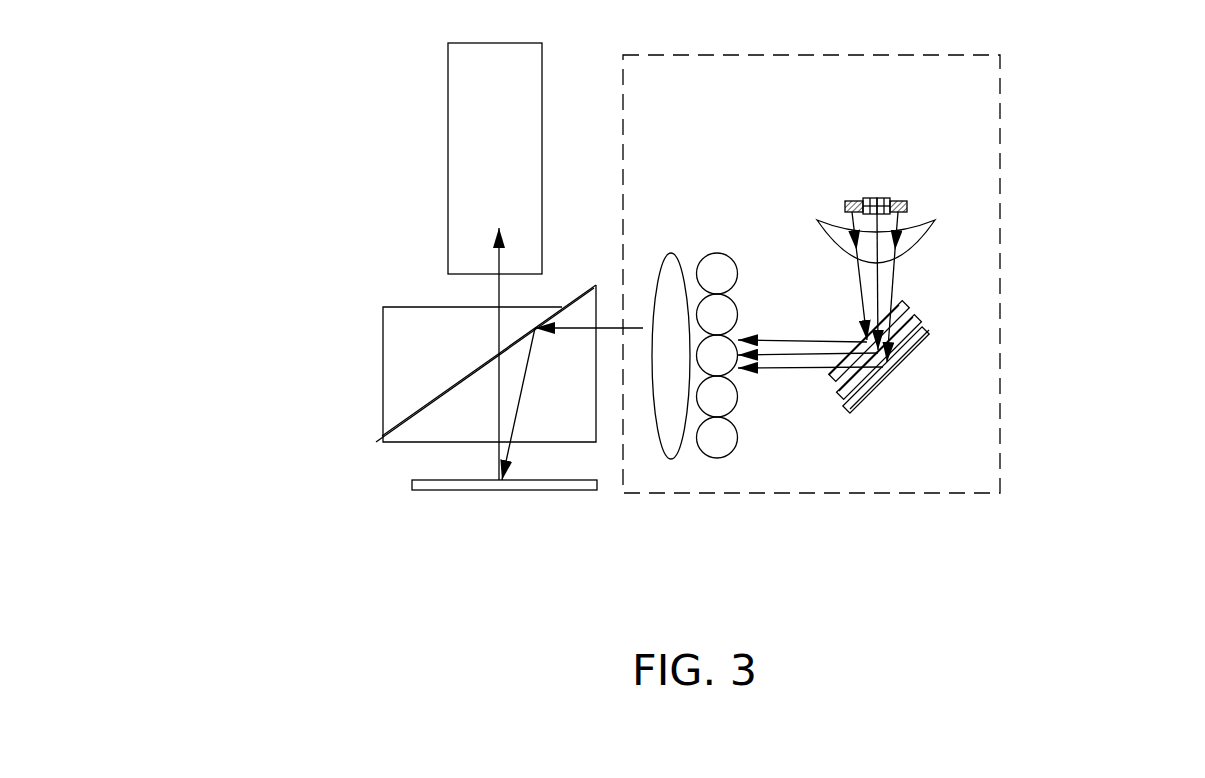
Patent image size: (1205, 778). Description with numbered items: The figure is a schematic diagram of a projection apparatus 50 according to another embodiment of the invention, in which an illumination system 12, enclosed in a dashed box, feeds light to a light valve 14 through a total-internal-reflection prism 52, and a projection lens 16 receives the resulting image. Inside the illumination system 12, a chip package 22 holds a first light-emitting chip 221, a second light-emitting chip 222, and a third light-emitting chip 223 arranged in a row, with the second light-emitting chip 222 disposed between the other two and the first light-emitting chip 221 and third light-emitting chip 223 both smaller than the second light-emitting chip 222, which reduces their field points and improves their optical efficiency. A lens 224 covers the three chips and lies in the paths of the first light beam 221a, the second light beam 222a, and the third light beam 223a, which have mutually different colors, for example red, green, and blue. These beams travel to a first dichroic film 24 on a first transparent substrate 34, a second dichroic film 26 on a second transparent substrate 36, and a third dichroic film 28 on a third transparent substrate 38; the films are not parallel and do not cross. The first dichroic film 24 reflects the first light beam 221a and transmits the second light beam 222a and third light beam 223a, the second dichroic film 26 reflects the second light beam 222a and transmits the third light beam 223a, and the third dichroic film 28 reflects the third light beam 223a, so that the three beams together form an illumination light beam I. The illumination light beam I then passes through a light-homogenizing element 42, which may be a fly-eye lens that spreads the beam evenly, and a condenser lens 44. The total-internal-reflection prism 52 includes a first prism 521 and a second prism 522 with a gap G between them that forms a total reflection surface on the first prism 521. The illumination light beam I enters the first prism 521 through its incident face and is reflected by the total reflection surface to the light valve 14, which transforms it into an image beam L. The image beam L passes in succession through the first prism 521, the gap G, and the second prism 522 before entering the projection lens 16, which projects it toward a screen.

The projection apparatus 50 is at (280, 83).
The projection lens 16 is at (448, 225).
The total-internal-reflection prism 52 is at (423, 349).
The second prism 522 is at (395, 368).
The first prism 521 is at (395, 440).
The gap G is at (380, 438).
The light valve 14 is at (412, 482).
The image beam L is at (508, 354).
The illumination light beam I is at (589, 315).
The illumination system 12 is at (1001, 275).
The condenser lens 44 is at (669, 254).
The light-homogenizing element 42 is at (711, 255).
The chip package 22 is at (940, 137).
The first light-emitting chip 221 is at (853, 199).
The second light-emitting chip 222 is at (881, 198).
The third light-emitting chip 223 is at (907, 203).
The lens 224 is at (818, 221).
The first light beam 221a is at (853, 270).
The second light beam 222a is at (877, 290).
The third light beam 223a is at (898, 268).
The first dichroic film 24 is at (904, 302).
The second dichroic film 26 is at (918, 318).
The third dichroic film 28 is at (932, 337).
The first transparent substrate 34 is at (835, 383).
The second transparent substrate 36 is at (843, 400).
The third transparent substrate 38 is at (872, 390).